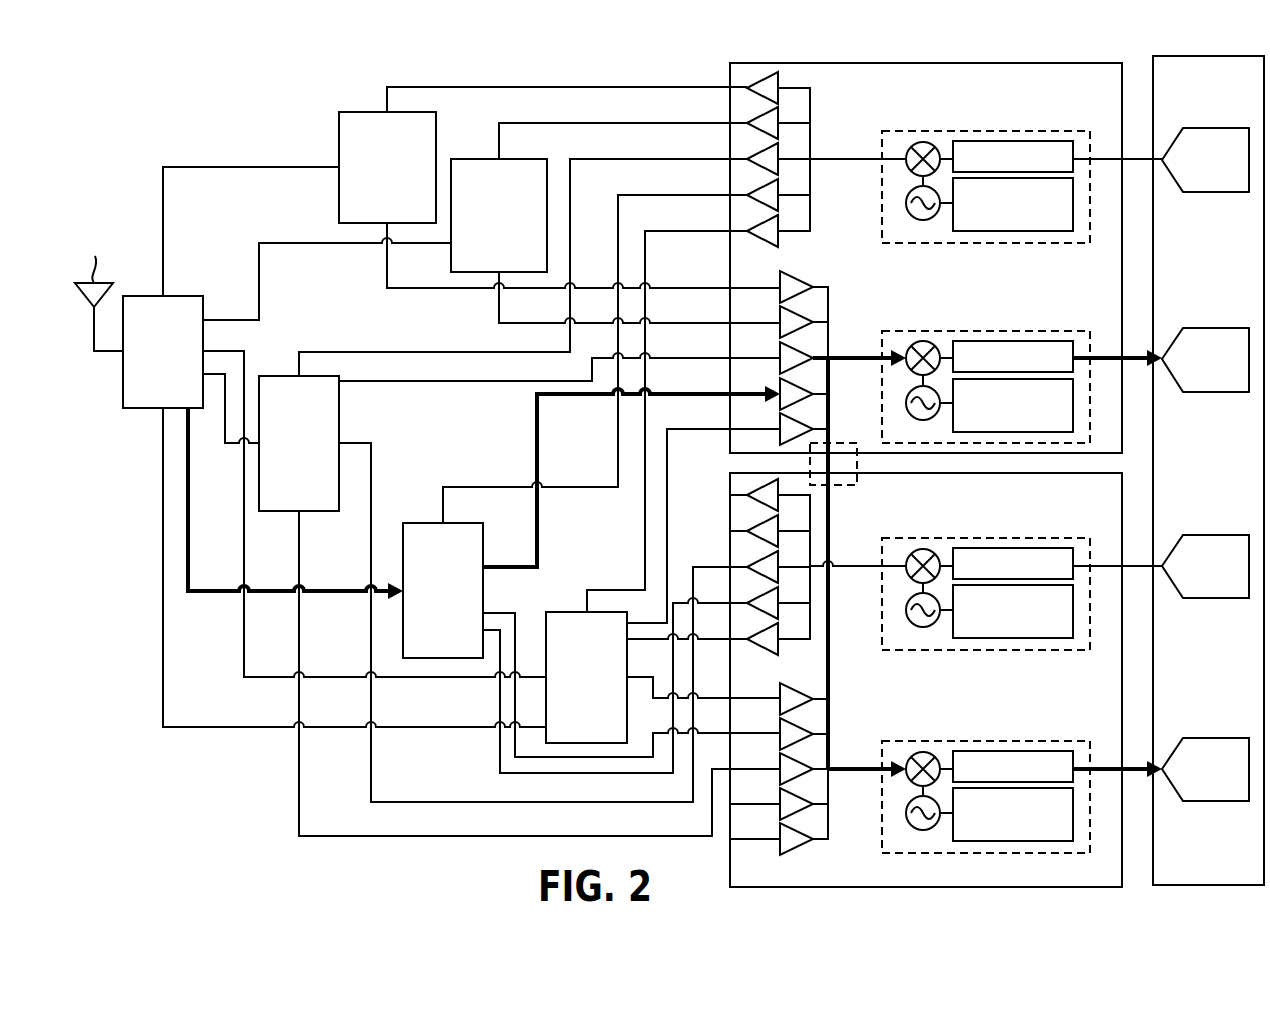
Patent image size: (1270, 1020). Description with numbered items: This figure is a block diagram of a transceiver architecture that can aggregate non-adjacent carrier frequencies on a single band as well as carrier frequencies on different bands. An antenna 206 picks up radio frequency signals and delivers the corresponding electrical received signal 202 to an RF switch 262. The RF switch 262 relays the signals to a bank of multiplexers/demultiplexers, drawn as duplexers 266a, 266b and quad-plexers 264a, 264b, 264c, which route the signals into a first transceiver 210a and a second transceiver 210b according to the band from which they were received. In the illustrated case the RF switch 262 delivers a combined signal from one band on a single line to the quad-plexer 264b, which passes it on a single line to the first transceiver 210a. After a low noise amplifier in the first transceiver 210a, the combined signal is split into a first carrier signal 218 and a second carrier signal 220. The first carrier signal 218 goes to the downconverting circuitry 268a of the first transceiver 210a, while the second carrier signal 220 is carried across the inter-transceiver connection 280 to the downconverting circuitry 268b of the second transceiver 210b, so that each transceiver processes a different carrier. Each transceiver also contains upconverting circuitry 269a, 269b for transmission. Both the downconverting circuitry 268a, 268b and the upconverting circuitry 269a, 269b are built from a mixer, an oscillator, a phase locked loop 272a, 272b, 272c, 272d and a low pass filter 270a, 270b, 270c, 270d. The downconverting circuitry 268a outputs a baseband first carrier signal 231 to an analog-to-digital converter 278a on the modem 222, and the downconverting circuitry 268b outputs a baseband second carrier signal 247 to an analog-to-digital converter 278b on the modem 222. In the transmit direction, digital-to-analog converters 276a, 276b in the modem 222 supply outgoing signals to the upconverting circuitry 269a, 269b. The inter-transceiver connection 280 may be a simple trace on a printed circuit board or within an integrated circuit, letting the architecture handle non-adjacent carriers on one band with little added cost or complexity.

The received signal 202 is at (103, 353).
The antenna 206 is at (93, 251).
The first transceiver 210a is at (946, 415).
The second transceiver 210b is at (946, 680).
The first carrier signal 218 is at (858, 356).
The second carrier signal 220 is at (828, 676).
The modem 222 is at (1208, 470).
The baseband first carrier signal 231 is at (1110, 355).
The baseband second carrier signal 247 is at (1108, 765).
The RF switch 262 is at (334, 447).
The quad-plexer 264a is at (519, 497).
The quad-plexer 264b is at (591, 484).
The quad-plexer 264c is at (663, 487).
The duplexer 266a is at (559, 187).
The duplexer 266b is at (615, 223).
The downconverting circuitry 268a is at (986, 363).
The downconverting circuitry 268b is at (986, 771).
The upconverting circuitry 269a is at (986, 161).
The upconverting circuitry 269b is at (990, 569).
The low pass filter 270a is at (989, 158).
The low pass filter 270b is at (989, 358).
The low pass filter 270c is at (989, 565).
The low pass filter 270d is at (989, 768).
The phase locked loop 272a is at (989, 203).
The phase locked loop 272b is at (989, 403).
The phase locked loop 272c is at (989, 610).
The phase locked loop 272d is at (989, 813).
The digital-to-analog converter 276a is at (1205, 160).
The digital-to-analog converter 276b is at (1205, 566).
The analog-to-digital converter 278a is at (1205, 360).
The analog-to-digital converter 278b is at (1205, 769).
The inter-transceiver connection 280 is at (808, 462).